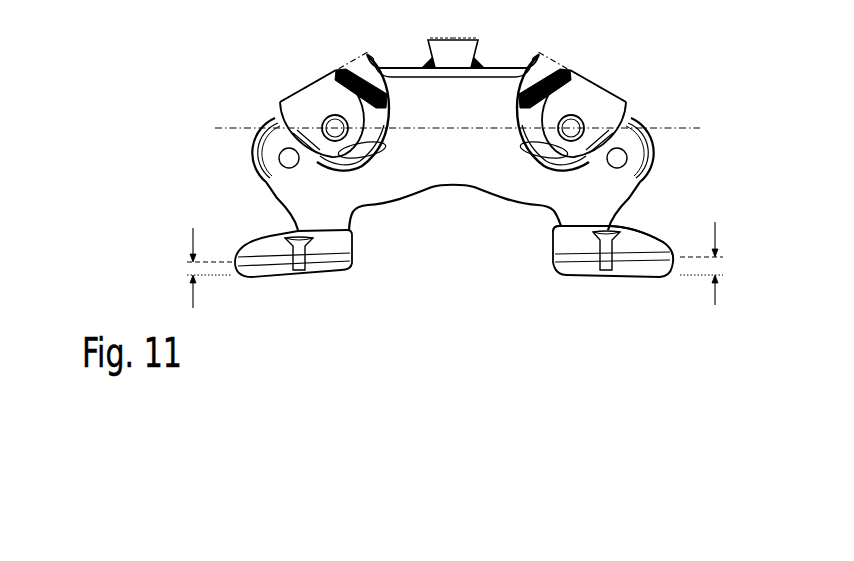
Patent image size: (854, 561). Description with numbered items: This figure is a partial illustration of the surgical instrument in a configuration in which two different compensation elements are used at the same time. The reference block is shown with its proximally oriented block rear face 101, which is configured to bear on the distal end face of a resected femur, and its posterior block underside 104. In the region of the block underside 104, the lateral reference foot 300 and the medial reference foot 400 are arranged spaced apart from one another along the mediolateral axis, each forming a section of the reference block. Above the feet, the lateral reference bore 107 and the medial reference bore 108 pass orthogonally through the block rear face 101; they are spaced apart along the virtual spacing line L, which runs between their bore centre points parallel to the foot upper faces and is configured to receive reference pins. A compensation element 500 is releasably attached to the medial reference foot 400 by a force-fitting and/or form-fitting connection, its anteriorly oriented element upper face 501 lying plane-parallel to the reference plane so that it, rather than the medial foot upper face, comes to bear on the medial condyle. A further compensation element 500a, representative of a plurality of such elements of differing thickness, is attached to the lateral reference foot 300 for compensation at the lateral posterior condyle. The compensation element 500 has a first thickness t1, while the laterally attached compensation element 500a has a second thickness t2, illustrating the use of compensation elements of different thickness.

The block rear face 101 is at (493, 95).
The block underside 104 is at (388, 208).
The lateral reference bore 107 is at (332, 117).
The medial reference bore 108 is at (582, 114).
The virtual spacing line L is at (663, 127).
The lateral reference foot 300 is at (299, 270).
The medial reference foot 400 is at (606, 270).
The compensation element 500 is at (632, 268).
The compensation element 500a is at (253, 243).
The element upper face 501 is at (645, 237).
The first thickness t1 is at (708, 270).
The second thickness t2 is at (201, 265).